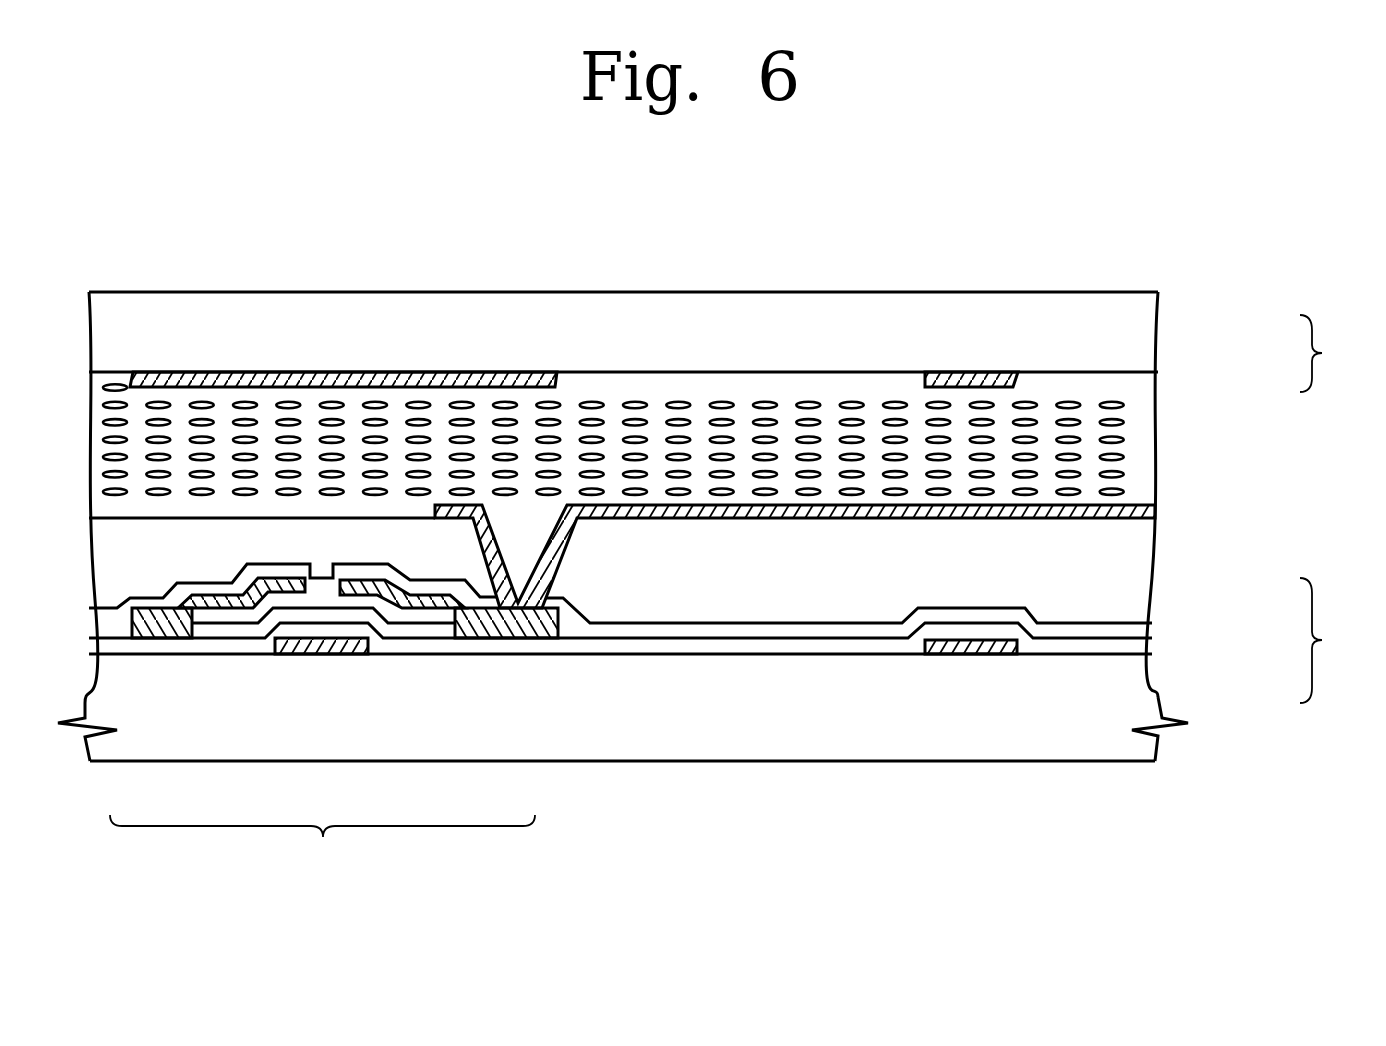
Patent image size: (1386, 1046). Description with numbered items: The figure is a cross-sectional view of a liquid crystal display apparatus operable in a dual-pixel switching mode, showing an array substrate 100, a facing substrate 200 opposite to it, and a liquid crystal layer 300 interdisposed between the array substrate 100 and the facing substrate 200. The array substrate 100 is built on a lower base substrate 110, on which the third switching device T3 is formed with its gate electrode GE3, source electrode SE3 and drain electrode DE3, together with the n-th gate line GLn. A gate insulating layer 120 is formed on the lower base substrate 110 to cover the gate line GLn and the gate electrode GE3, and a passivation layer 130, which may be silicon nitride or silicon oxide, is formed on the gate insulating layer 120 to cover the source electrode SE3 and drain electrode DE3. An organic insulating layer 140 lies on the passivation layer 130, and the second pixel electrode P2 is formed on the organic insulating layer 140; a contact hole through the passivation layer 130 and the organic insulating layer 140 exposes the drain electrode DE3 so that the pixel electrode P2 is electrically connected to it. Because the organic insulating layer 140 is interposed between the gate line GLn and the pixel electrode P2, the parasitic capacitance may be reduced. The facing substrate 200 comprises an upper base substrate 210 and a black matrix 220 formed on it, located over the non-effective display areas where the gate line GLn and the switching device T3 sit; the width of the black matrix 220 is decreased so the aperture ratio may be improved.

The upper base substrate 210 is at (1138, 328).
The black matrix 220 is at (1018, 370).
The facing substrate 200 is at (1339, 353).
The liquid crystal layer 300 is at (1120, 445).
The organic insulating layer 140 is at (1140, 590).
The passivation layer 130 is at (1140, 628).
The gate insulating layer 120 is at (1140, 650).
The lower base substrate 110 is at (1150, 688).
The array substrate 100 is at (1340, 640).
The second pixel electrode P2 is at (777, 507).
The n-th gate line GLn is at (970, 656).
The third switching device T3 is at (334, 727).
The source electrode SE3 is at (137, 632).
The gate electrode GE3 is at (322, 656).
The drain electrode DE3 is at (498, 640).